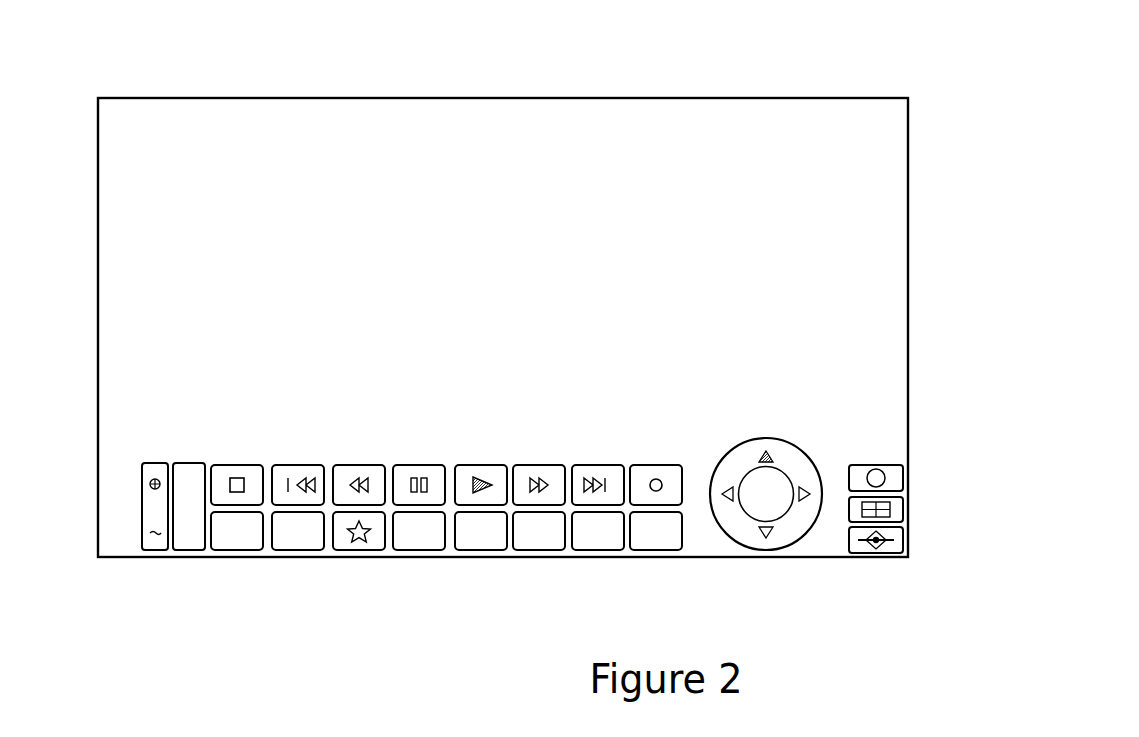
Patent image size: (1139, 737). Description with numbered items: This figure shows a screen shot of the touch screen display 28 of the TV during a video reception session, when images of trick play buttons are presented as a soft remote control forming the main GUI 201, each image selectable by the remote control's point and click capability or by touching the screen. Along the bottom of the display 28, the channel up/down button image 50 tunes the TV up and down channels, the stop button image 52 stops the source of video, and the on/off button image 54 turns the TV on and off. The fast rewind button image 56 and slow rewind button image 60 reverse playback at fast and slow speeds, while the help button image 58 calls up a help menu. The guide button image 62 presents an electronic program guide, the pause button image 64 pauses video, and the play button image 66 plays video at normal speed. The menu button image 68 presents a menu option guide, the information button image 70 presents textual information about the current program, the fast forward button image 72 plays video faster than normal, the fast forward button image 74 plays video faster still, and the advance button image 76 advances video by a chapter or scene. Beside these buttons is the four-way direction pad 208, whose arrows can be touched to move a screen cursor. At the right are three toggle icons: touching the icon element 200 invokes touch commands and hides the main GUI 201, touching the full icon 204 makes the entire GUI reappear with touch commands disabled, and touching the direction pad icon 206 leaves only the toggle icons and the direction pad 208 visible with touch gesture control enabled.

The display 28 is at (653, 85).
The channel up/down button image 50 is at (155, 538).
The stop button image 52 is at (236, 472).
The on/off button image 54 is at (239, 541).
The fast rewind button image 56 is at (296, 472).
The help button image 58 is at (299, 541).
The slow rewind button image 60 is at (355, 472).
The guide button image 62 is at (428, 541).
The pause button image 64 is at (415, 472).
The play button image 66 is at (480, 472).
The menu button image 68 is at (482, 541).
The information button image 70 is at (535, 541).
The fast forward button image 72 is at (530, 472).
The fast forward button image 74 is at (592, 472).
The advance button image 76 is at (590, 541).
The icon element 200 is at (898, 543).
The main GUI 201 is at (362, 568).
The full icon 204 is at (898, 478).
The direction pad icon 206 is at (898, 506).
The four-way direction pad 208 is at (811, 456).